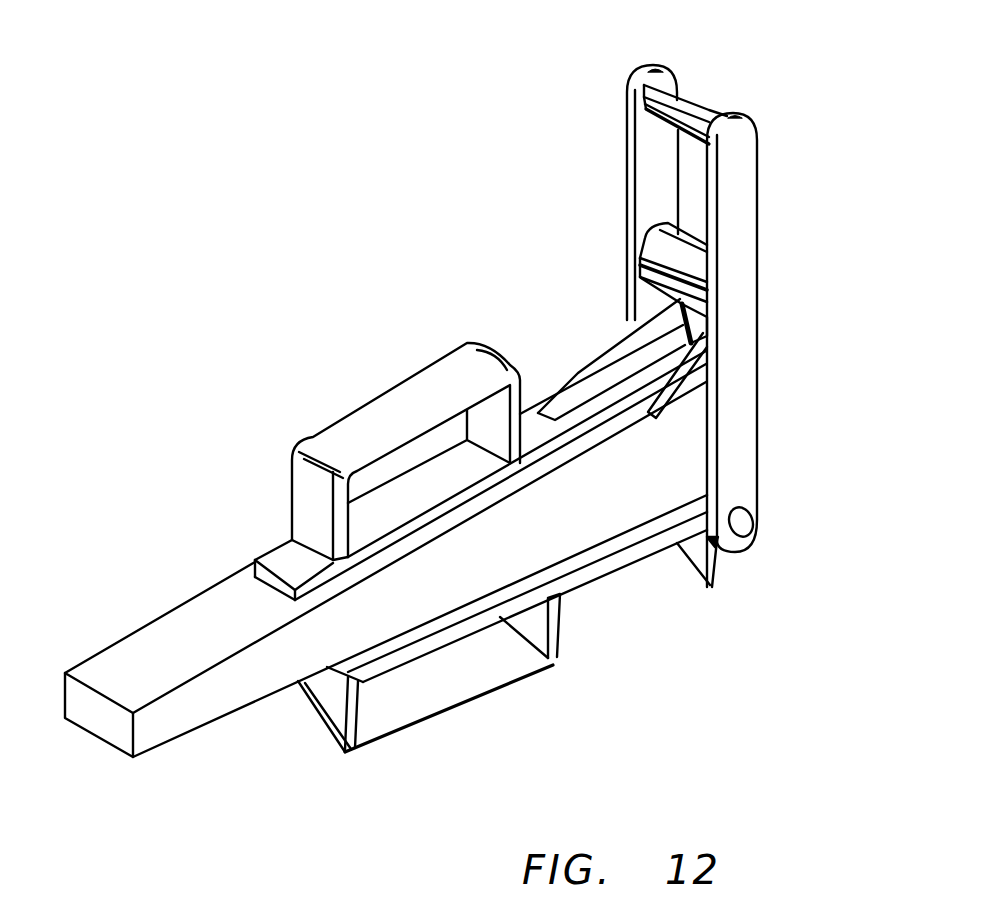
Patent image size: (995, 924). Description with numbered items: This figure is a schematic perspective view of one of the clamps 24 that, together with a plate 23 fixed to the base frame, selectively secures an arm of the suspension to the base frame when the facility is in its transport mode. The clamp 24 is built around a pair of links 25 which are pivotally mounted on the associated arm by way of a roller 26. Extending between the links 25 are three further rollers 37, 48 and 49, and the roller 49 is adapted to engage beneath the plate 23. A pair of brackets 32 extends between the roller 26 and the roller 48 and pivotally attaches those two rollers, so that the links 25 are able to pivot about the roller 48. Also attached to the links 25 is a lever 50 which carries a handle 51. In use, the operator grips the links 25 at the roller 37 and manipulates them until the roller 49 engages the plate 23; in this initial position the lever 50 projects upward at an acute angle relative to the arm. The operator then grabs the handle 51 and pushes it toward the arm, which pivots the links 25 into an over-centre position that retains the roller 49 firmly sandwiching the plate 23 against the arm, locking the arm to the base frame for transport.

The plate 23 is at (609, 568).
The clamp 24 is at (446, 251).
The link 25 is at (626, 160).
The roller 26 is at (706, 326).
The bracket 32 is at (650, 288).
The roller 37 is at (682, 101).
The roller 48 is at (662, 253).
The roller 49 is at (746, 527).
The lever 50 is at (281, 557).
The handle 51 is at (292, 447).